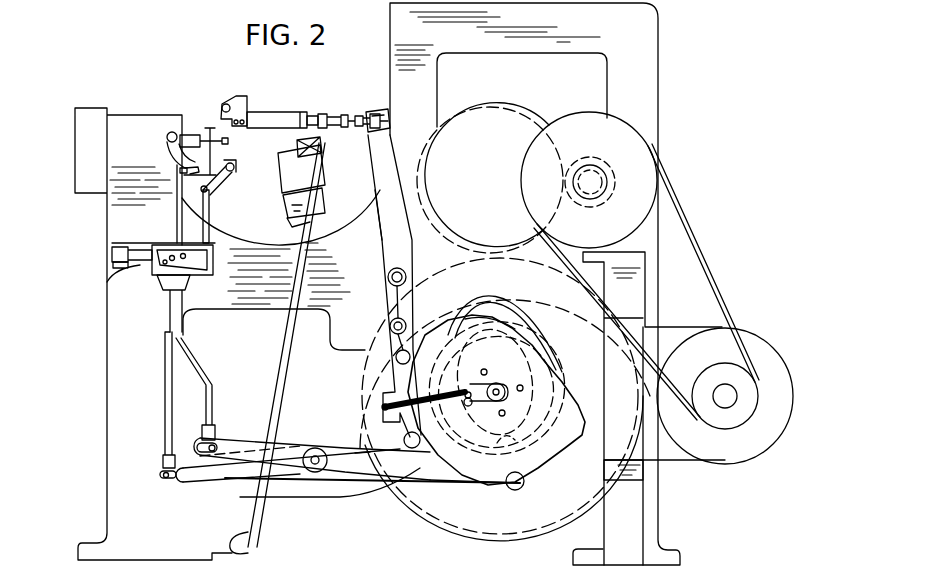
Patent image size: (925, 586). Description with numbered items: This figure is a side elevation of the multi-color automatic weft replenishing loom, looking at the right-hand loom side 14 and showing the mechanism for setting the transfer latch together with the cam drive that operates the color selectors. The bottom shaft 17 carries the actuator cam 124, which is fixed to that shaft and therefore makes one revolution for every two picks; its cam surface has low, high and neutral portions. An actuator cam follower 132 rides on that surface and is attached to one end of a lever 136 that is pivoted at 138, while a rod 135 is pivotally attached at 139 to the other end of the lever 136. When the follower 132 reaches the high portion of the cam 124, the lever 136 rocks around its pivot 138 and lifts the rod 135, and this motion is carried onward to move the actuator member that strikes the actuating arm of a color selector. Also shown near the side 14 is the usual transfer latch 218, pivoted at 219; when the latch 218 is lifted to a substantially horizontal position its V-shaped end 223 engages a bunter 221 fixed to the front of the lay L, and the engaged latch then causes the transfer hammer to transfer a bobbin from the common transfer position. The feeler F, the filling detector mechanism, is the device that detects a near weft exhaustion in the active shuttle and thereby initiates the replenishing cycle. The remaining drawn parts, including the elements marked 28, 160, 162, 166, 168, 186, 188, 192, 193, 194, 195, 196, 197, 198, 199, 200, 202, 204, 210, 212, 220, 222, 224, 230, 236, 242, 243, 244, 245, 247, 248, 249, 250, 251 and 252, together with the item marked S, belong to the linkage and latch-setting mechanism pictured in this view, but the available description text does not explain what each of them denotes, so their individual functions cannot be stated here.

The loom side 14 is at (122, 411).
The bottom shaft 17 is at (497, 383).
The feed direction 28 is at (343, 414).
The actuator cam 124 is at (542, 349).
The actuator cam follower 132 is at (522, 484).
The rod 135 is at (189, 332).
The lever 136 is at (282, 462).
The pivot 138 is at (336, 444).
The pivot attachment 139 is at (214, 442).
The air cylinder 160 is at (276, 103).
The cam 162 is at (542, 380).
The piston rod 166 is at (286, 121).
The bracket 168 is at (234, 96).
The rod 186 is at (209, 127).
The coupling 188 is at (327, 113).
The lever arm 192 is at (384, 163).
The pivot bracket 193 is at (392, 112).
The link 194 is at (397, 343).
The roller 195 is at (388, 277).
The roller 196 is at (391, 325).
The link 197 is at (404, 447).
The stop 198 is at (577, 455).
The cam plate 199 is at (548, 456).
The bar 200 is at (488, 494).
The cam 202 is at (538, 333).
The arm 204 is at (400, 300).
The roller 210 is at (417, 350).
The arm 212 is at (388, 225).
The transfer latch 218 is at (170, 152).
The pivot 219 is at (170, 133).
The link 220 is at (234, 191).
The bunter 221 is at (234, 170).
The link 222 is at (208, 217).
The V-shaped end 223 is at (182, 172).
The cable 224 is at (146, 268).
The clamp 230 is at (140, 252).
The bracket 236 is at (186, 268).
The rod 242 is at (167, 345).
The slot 243 is at (165, 479).
The lever 244 is at (232, 463).
The bar 245 is at (287, 486).
The link 247 is at (362, 452).
The cam track 248 is at (575, 398).
The cam lobe 249 is at (488, 308).
The track 250 is at (503, 310).
The track 251 is at (517, 313).
The cam 252 is at (582, 424).
The filling detector mechanism or feeler F is at (234, 150).
The sensor S is at (326, 152).
The lay L is at (298, 233).